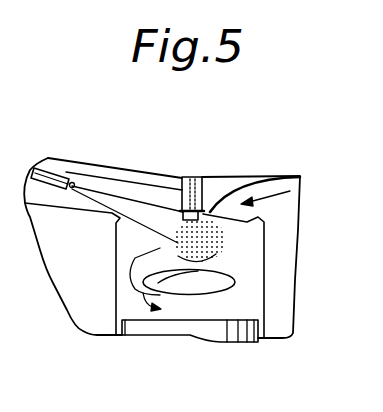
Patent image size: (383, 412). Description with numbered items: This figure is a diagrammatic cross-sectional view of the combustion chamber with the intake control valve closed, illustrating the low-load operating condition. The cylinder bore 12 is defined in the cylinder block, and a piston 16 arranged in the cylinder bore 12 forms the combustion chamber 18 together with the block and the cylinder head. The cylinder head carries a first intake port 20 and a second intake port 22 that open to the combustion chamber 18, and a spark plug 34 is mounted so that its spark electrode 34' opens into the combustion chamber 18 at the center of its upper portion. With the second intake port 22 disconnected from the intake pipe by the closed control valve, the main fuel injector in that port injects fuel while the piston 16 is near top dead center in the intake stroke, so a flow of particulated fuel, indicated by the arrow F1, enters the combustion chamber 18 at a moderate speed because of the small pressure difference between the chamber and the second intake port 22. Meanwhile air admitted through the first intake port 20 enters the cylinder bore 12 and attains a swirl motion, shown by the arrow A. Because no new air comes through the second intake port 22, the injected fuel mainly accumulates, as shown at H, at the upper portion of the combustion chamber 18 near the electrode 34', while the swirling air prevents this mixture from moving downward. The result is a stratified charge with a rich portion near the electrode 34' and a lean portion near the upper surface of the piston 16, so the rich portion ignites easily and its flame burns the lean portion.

The cylinder bore 12 is at (264, 289).
The piston 16 is at (180, 330).
The combustion chamber 18 is at (207, 294).
The first intake port 20 is at (282, 205).
The second intake port 22 is at (118, 189).
The spark plug 34 is at (202, 176).
The spark electrode 34' is at (227, 181).
The flow of particulated fuel F1 is at (119, 225).
The swirl motion A is at (127, 276).
The accumulated fuel H is at (212, 250).